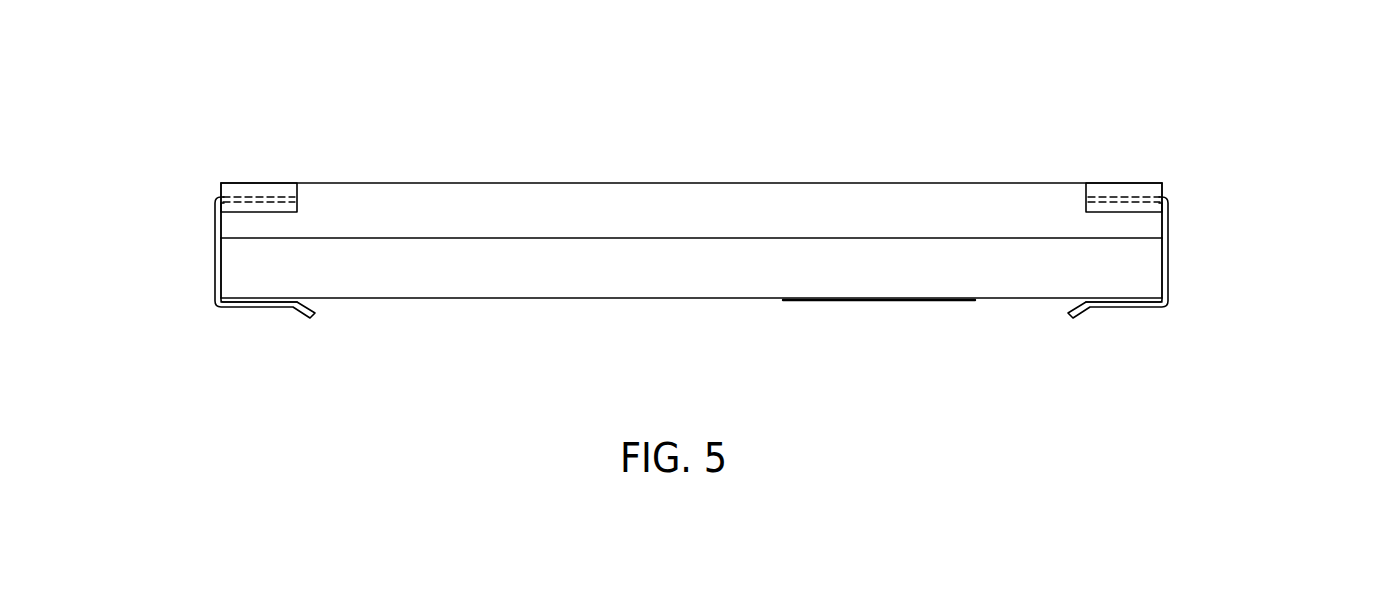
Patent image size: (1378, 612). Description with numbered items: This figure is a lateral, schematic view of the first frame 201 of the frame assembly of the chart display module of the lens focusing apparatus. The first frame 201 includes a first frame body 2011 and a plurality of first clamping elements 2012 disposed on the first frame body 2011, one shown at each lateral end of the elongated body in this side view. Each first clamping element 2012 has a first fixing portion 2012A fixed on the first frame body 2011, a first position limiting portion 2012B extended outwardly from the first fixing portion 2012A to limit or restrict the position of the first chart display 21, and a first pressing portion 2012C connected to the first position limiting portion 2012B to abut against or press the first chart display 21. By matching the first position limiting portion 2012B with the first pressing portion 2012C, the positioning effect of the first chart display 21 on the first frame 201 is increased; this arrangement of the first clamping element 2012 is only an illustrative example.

The first frame 201 is at (192, 64).
The first frame body 2011 is at (668, 202).
The first chart display 21 is at (673, 283).
The first clamping element 2012 is at (101, 156).
The first fixing portion 2012A is at (256, 195).
The first position limiting portion 2012B is at (215, 247).
The first pressing portion 2012C is at (262, 307).